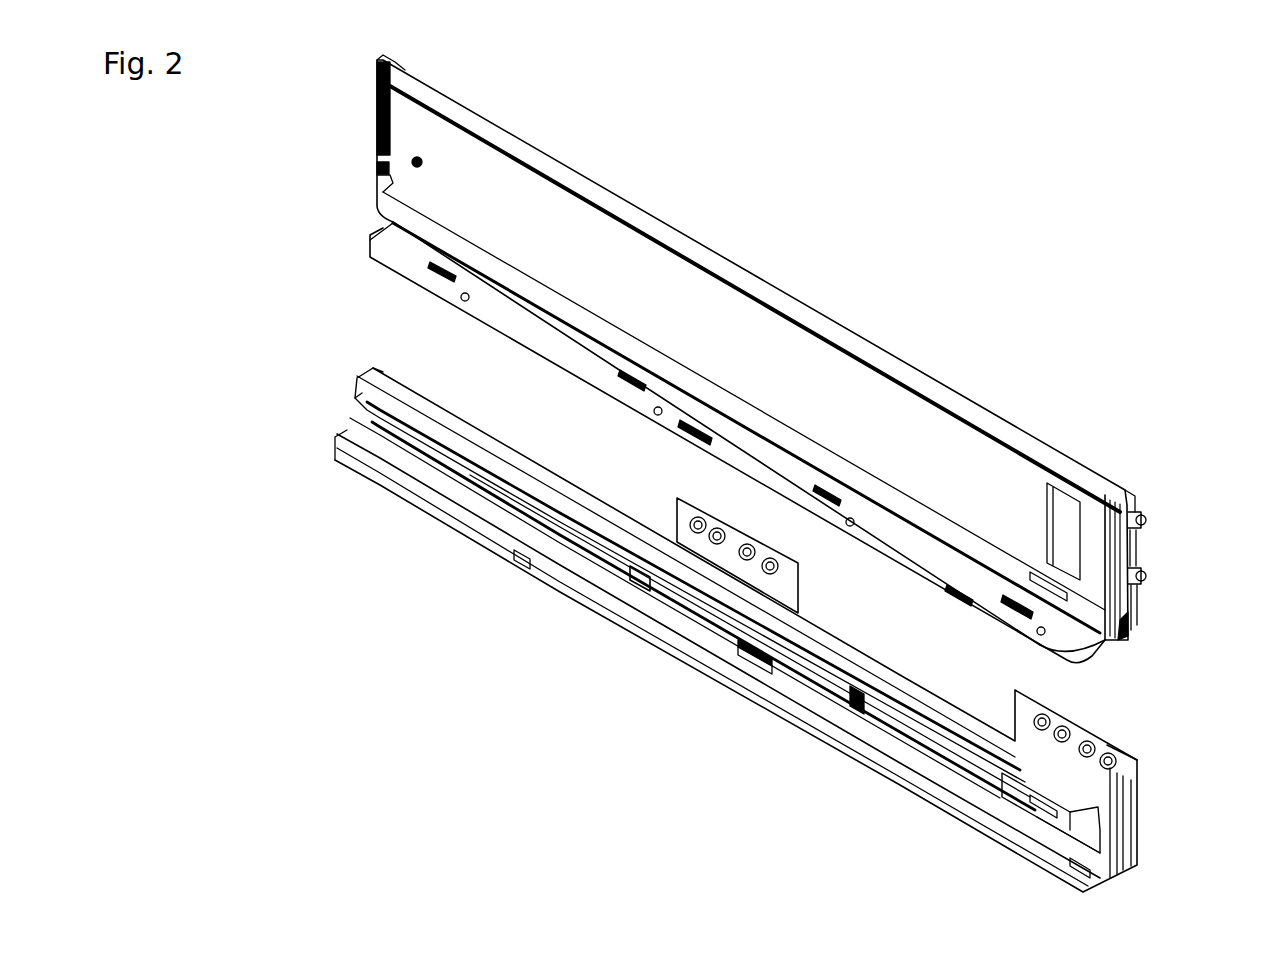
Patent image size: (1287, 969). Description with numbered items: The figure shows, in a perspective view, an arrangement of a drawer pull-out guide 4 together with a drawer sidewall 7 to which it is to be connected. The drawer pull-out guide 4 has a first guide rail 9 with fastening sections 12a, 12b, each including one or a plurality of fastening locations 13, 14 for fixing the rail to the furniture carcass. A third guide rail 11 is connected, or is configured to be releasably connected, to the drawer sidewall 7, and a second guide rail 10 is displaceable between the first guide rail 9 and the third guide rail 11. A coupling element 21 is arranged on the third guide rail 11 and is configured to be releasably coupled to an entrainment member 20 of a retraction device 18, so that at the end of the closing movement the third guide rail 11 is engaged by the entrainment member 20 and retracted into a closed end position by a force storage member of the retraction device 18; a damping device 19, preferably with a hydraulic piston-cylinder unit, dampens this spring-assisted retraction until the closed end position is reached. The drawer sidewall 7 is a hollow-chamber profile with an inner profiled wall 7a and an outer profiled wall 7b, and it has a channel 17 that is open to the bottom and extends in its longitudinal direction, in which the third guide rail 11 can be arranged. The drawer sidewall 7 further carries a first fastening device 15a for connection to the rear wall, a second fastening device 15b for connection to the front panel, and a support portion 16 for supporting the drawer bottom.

The drawer pull-out guide 4 is at (380, 511).
The drawer sidewall 7 is at (846, 316).
The inner profiled wall 7a is at (380, 208).
The outer profiled wall 7b is at (985, 388).
The first guide rail 9 is at (495, 560).
The second guide rail 10 is at (1060, 846).
The third guide rail 11 is at (878, 666).
The fastening section 12a is at (677, 520).
The fastening section 12b is at (1138, 778).
The fastening locations 13 is at (765, 560).
The fastening locations 14 is at (1098, 745).
The first fastening device 15a is at (364, 141).
The second fastening device 15b is at (1147, 556).
The support portion 16 is at (420, 264).
The channel 17 is at (1132, 640).
The retraction device 18 is at (680, 640).
The damping device 19 is at (912, 748).
The entrainment member 20 is at (742, 658).
The coupling element 21 is at (636, 590).